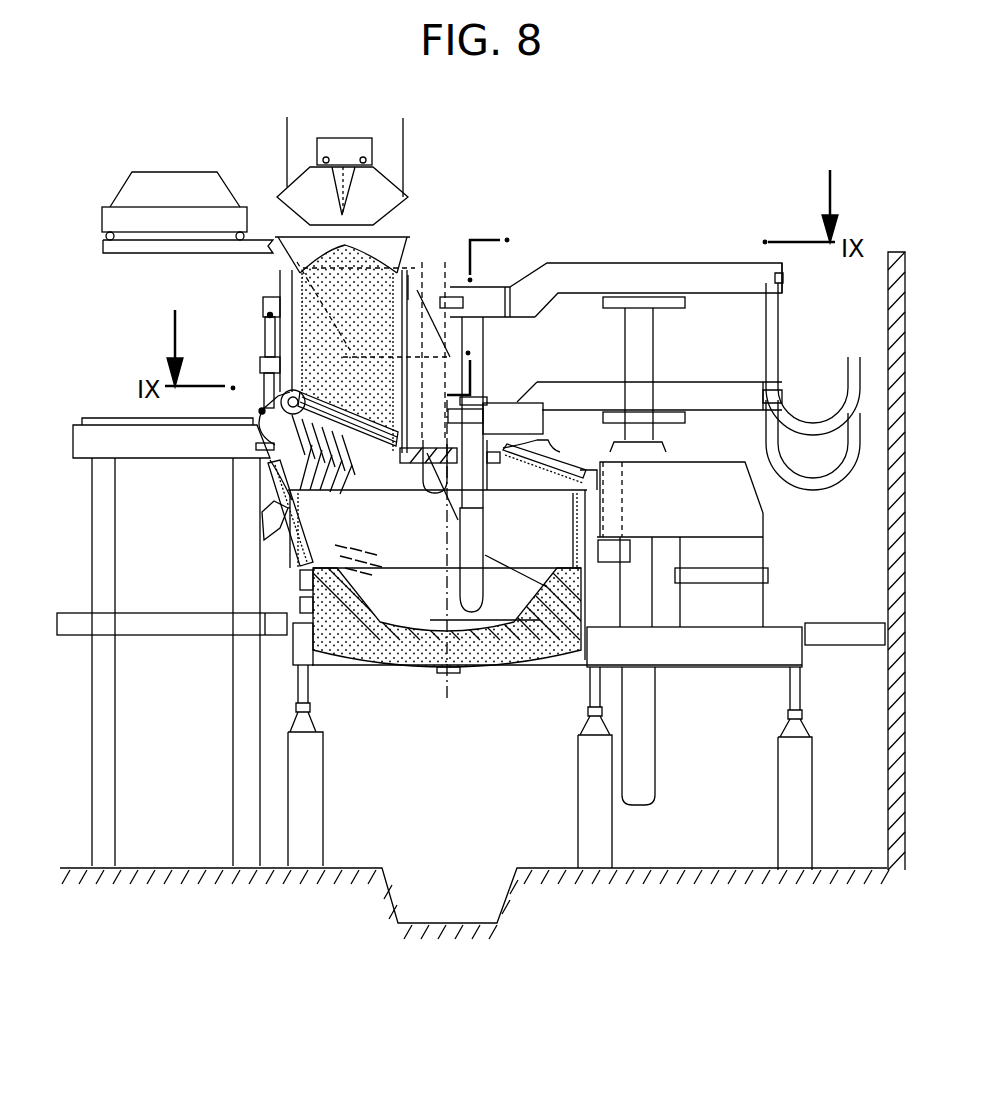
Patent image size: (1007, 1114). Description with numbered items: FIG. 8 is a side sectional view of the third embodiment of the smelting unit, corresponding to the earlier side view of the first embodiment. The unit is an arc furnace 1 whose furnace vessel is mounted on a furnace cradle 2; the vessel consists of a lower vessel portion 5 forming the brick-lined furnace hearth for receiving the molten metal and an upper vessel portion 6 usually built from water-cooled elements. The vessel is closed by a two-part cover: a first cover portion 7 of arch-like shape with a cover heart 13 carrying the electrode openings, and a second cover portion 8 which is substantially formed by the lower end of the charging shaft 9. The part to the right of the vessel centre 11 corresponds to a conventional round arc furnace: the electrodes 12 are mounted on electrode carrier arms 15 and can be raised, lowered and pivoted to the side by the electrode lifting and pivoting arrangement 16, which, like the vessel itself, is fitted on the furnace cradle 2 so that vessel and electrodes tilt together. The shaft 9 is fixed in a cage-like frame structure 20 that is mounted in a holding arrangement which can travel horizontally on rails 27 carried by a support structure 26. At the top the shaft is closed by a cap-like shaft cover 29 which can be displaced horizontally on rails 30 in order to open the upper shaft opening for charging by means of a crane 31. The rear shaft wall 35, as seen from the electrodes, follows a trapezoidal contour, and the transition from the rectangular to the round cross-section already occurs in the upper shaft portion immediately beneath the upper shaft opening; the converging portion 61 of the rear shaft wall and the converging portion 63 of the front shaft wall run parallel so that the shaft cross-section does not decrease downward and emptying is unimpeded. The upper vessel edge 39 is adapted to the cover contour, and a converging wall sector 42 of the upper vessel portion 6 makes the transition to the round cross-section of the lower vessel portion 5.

The arc furnace 1 is at (504, 381).
The furnace cradle 2 is at (313, 686).
The lower vessel portion 5 is at (318, 598).
The upper vessel portion 6 is at (264, 540).
The first cover portion 7 is at (543, 480).
The second cover portion 8 is at (392, 480).
The shaft 9 is at (256, 409).
The vessel centre 11 is at (452, 680).
The electrodes 12 is at (443, 285).
The cover heart 13 is at (500, 470).
The electrode carrier arms 15 is at (623, 278).
The electrode lifting and pivoting arrangement 16 is at (702, 452).
The frame structure 20 is at (407, 275).
The support structure 26 is at (108, 555).
The rails 27 is at (101, 418).
The shaft cover 29 is at (157, 185).
The rails 30 is at (137, 248).
The crane 31 is at (388, 140).
The rear shaft wall 35 is at (272, 446).
The upper vessel edge 39 is at (292, 500).
The converging wall sector 42 is at (366, 498).
The converging portion of the rear shaft wall 61 is at (300, 305).
The converging portion of the front shaft wall 63 is at (418, 303).